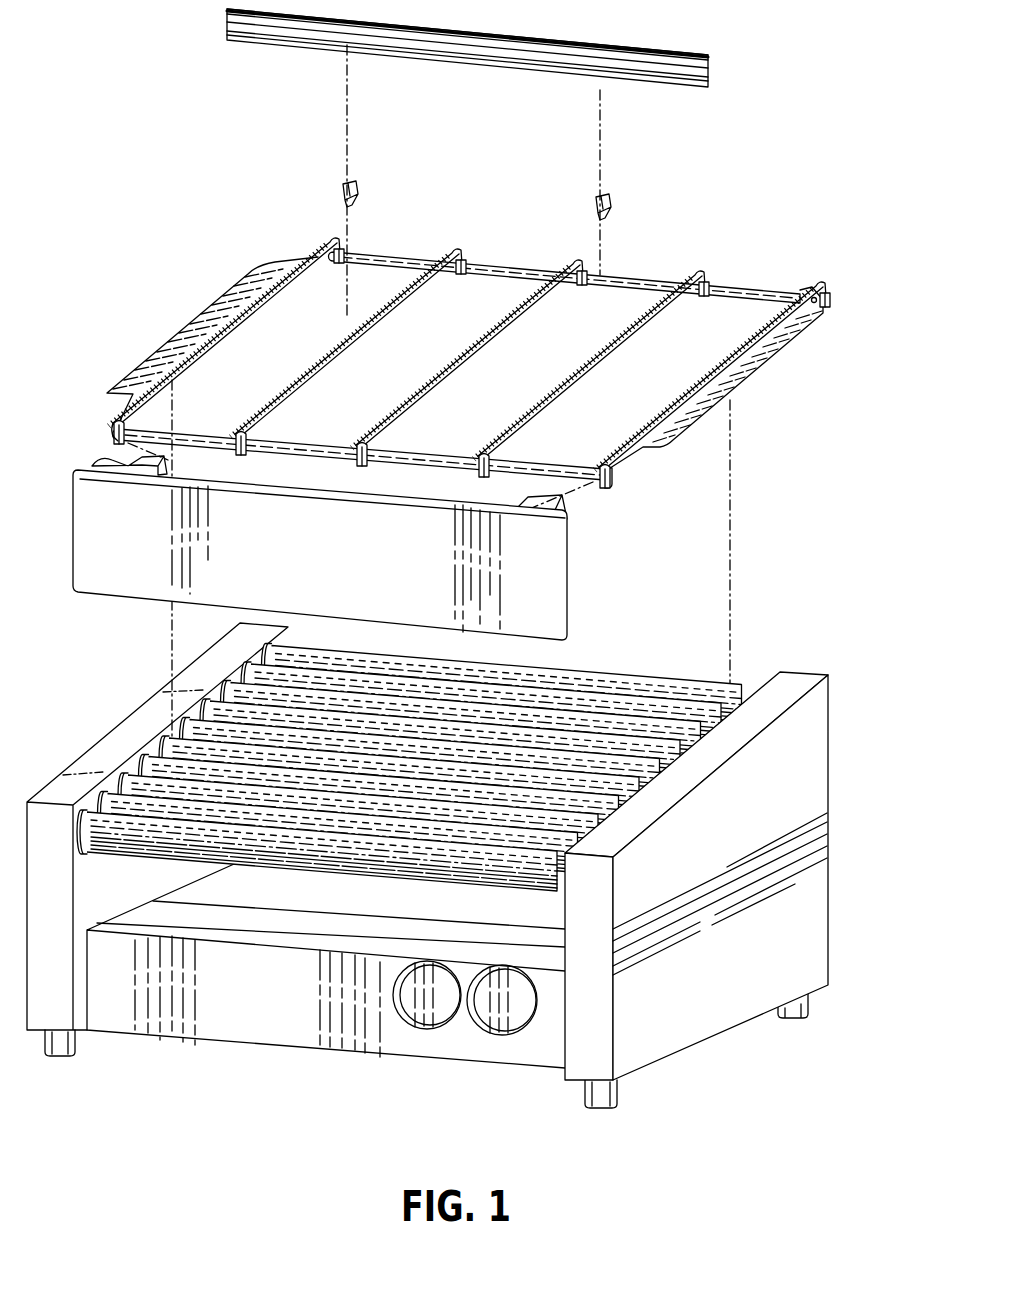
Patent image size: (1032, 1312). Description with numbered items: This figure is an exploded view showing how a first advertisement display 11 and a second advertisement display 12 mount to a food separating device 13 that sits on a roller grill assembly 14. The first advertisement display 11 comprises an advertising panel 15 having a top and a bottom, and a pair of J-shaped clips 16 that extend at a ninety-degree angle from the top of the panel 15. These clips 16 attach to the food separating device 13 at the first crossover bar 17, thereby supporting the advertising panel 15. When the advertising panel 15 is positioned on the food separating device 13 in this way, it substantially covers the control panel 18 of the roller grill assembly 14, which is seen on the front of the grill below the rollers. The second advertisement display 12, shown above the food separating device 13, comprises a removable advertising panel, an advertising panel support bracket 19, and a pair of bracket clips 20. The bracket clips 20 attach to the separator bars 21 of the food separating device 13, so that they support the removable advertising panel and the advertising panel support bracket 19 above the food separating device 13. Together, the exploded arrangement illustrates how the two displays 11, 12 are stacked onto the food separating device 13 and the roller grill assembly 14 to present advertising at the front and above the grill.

The first advertisement display 11 is at (593, 588).
The second advertisement display 12 is at (460, 43).
The food separating device 13 is at (511, 358).
The roller grill assembly 14 is at (475, 874).
The advertising panel 15 is at (80, 565).
The J-shaped clips 16 is at (128, 463).
The first crossover bar 17 is at (190, 440).
The control panel 18 is at (290, 1028).
The advertising panel support bracket 19 is at (227, 13).
The bracket clips 20 is at (360, 185).
The separator bars 21 is at (562, 416).